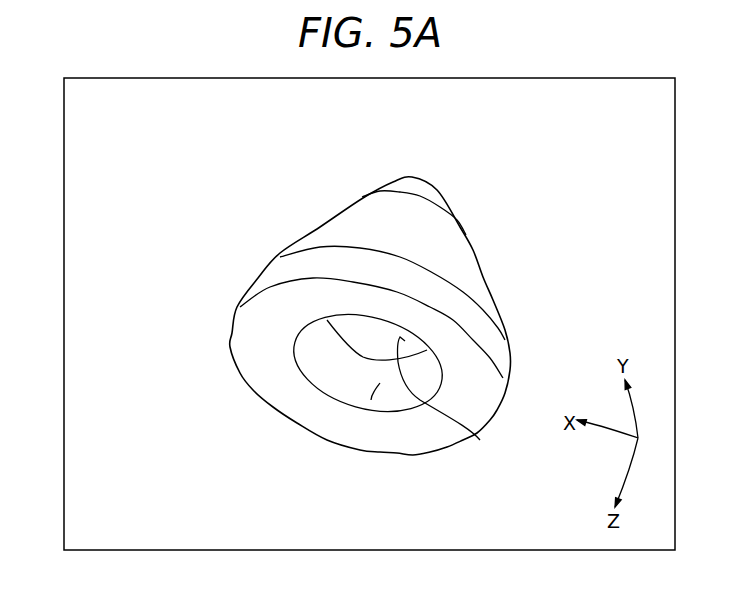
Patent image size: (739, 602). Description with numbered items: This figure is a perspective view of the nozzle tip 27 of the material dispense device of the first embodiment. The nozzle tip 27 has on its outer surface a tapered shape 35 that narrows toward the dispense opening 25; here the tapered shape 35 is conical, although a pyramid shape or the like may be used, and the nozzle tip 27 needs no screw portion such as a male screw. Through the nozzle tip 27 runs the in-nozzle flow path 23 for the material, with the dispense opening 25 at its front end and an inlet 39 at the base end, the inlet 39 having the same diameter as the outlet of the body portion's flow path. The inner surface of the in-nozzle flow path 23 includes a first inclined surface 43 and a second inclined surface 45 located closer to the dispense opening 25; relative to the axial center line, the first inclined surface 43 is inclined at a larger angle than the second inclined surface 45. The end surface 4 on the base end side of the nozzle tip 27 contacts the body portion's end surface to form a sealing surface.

The nozzle tip 27 is at (226, 209).
The dispense opening 25 is at (423, 175).
The tapered shape 35 is at (457, 248).
The end surface 4 is at (257, 330).
The inlet 39 is at (313, 385).
The in-nozzle flow path 23 is at (373, 343).
The first inclined surface 43 is at (371, 400).
The second inclined surface 45 is at (480, 440).